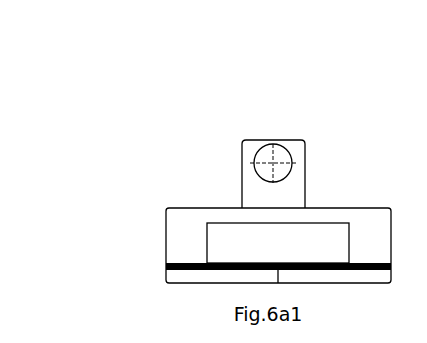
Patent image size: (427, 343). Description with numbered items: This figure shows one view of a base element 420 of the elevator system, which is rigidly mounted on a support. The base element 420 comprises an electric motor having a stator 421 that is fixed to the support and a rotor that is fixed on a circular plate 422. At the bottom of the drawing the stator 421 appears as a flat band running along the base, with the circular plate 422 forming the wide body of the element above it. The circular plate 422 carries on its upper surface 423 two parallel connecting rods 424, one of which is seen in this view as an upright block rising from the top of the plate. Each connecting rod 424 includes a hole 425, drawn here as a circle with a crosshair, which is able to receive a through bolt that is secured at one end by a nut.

The base element 420 is at (158, 172).
The stator 421 is at (170, 273).
The circular plate 422 is at (363, 217).
The upper surface 423 is at (185, 209).
The connecting rod 424 is at (255, 187).
The hole 425 is at (280, 153).